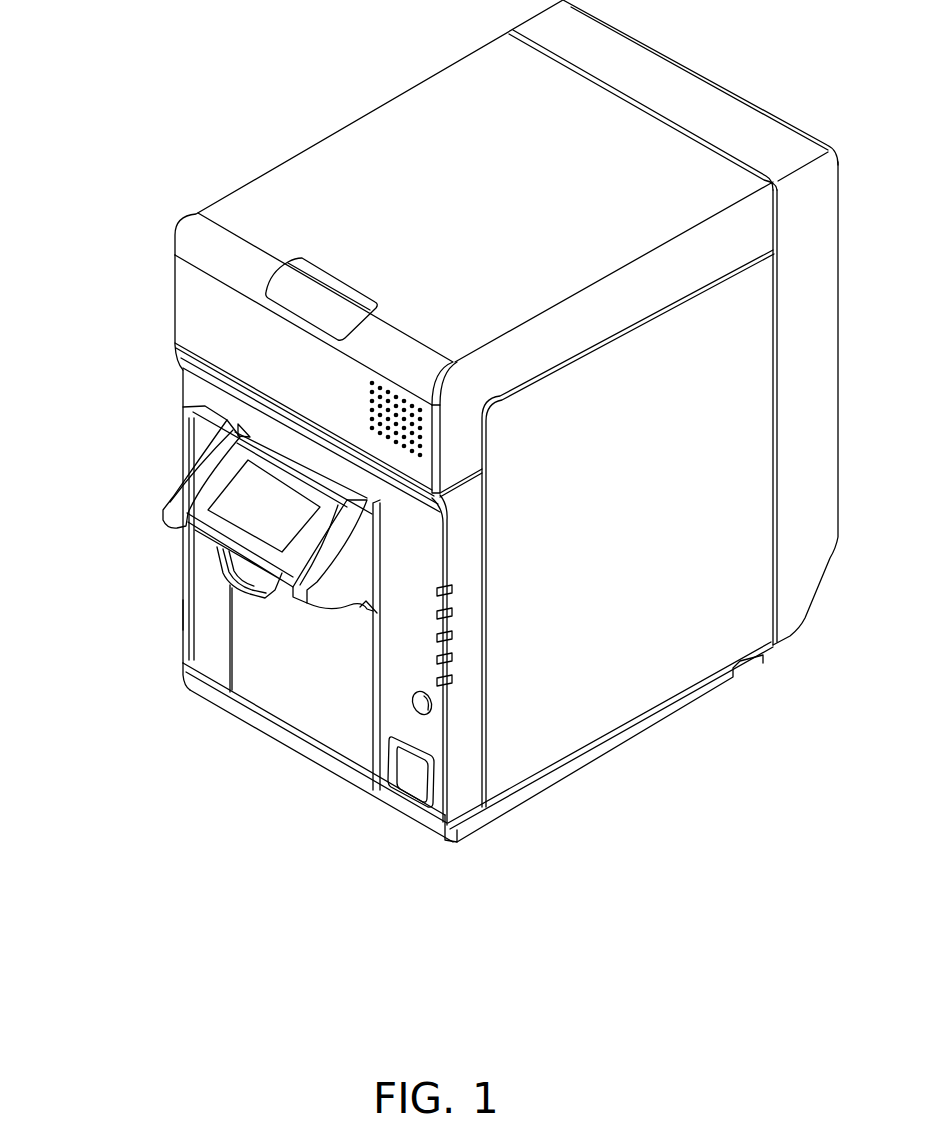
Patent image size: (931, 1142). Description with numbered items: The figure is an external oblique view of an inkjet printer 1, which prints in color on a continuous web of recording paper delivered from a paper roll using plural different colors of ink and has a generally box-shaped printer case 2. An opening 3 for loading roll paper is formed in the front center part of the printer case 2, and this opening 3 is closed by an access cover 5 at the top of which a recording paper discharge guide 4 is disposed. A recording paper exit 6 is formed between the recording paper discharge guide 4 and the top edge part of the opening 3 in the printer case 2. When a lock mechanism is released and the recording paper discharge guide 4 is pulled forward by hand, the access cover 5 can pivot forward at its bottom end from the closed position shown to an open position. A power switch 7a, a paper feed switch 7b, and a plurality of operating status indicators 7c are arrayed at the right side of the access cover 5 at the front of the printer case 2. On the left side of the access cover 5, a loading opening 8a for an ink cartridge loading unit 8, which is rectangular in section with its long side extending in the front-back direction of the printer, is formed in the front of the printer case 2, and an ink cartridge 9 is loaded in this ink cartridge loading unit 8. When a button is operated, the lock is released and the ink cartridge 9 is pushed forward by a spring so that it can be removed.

The inkjet printer 1 is at (255, 106).
The printer case 2 is at (394, 77).
The opening 3 is at (373, 693).
The recording paper discharge guide 4 is at (185, 512).
The access cover 5 is at (273, 672).
The recording paper exit 6 is at (303, 467).
The power switch 7a is at (413, 768).
The paper feed switch 7b is at (422, 714).
The operating status indicators 7c is at (450, 593).
The ink cartridge loading unit 8 is at (209, 640).
The loading opening 8a is at (183, 614).
The ink cartridge 9 is at (207, 580).